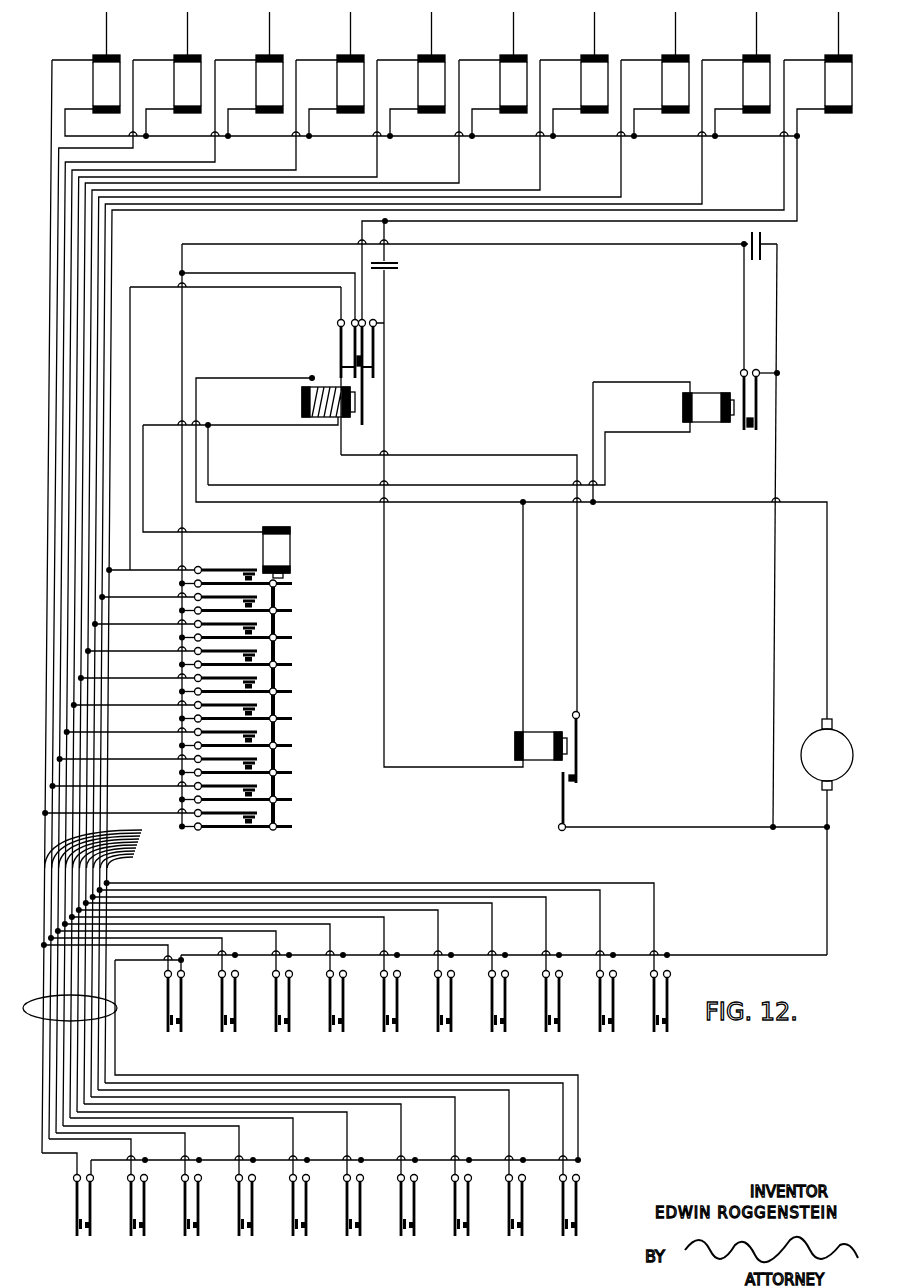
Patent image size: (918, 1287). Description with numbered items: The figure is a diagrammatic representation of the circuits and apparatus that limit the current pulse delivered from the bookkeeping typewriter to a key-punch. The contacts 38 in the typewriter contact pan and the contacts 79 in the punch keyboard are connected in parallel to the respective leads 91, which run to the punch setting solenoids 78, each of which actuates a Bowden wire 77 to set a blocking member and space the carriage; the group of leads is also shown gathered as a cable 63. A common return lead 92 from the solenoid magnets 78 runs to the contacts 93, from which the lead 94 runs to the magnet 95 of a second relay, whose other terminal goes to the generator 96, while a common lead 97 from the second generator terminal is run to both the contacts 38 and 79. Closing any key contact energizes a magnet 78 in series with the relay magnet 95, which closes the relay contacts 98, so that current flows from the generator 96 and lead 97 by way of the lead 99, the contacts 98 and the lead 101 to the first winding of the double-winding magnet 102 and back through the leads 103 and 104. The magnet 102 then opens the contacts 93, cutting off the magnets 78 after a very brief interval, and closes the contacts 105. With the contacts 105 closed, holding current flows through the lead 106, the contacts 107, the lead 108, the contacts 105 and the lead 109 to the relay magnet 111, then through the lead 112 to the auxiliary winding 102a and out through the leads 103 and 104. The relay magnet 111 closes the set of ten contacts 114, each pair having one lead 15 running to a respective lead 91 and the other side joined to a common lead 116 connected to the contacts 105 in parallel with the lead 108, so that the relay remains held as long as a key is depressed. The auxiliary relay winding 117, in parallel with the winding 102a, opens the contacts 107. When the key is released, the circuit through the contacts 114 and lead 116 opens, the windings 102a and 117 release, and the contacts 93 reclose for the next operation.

The Bowden wire 77 is at (838, 33).
The punch setting solenoids 78 is at (839, 113).
The common return lead 92 is at (797, 200).
The leads 91 is at (100, 276).
The lead 108 is at (543, 248).
The lead 106 is at (777, 493).
The lead 109 is at (130, 355).
The contacts 105 is at (348, 353).
The contacts 93 is at (368, 376).
The common lead 116 is at (182, 514).
The lead 103 is at (234, 377).
The lead 104 is at (715, 505).
The double-winding magnet 102 is at (338, 384).
The auxiliary winding 102a is at (290, 428).
The lead 112 is at (203, 478).
The relay magnet 111 is at (288, 552).
The auxiliary relay winding 117 is at (697, 403).
The contacts 107 is at (752, 405).
The lead 94 is at (384, 665).
The lead 101 is at (577, 601).
The relay magnet 95 is at (540, 732).
The generator 96 is at (838, 745).
The lead 99 is at (703, 826).
The relay contacts 98 is at (569, 790).
The common lead 97 is at (827, 870).
The contacts 114 is at (260, 794).
The conductors 15 is at (131, 598).
The cable 63 is at (117, 1008).
The contacts 79 is at (657, 1034).
The contacts 38 is at (540, 1237).